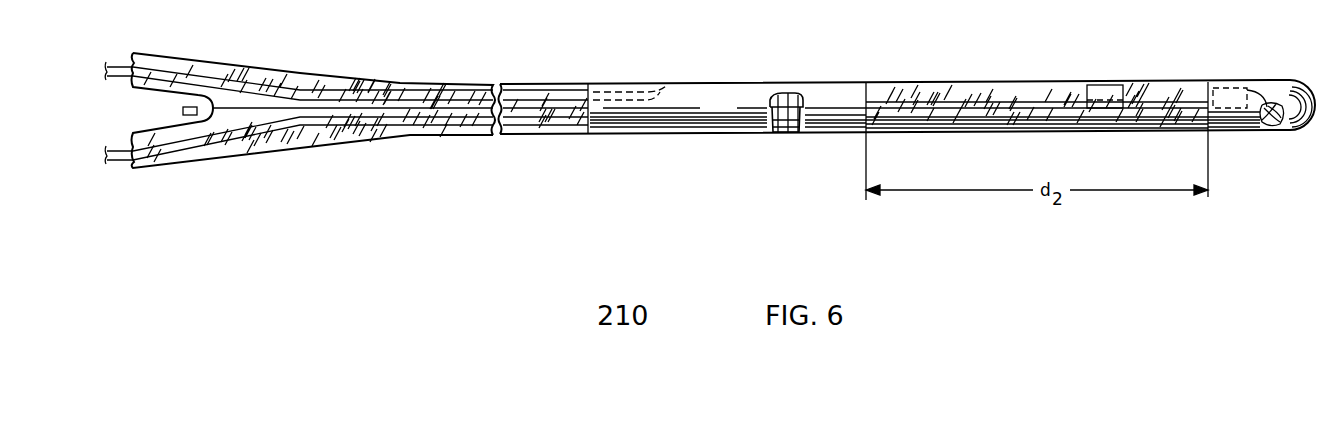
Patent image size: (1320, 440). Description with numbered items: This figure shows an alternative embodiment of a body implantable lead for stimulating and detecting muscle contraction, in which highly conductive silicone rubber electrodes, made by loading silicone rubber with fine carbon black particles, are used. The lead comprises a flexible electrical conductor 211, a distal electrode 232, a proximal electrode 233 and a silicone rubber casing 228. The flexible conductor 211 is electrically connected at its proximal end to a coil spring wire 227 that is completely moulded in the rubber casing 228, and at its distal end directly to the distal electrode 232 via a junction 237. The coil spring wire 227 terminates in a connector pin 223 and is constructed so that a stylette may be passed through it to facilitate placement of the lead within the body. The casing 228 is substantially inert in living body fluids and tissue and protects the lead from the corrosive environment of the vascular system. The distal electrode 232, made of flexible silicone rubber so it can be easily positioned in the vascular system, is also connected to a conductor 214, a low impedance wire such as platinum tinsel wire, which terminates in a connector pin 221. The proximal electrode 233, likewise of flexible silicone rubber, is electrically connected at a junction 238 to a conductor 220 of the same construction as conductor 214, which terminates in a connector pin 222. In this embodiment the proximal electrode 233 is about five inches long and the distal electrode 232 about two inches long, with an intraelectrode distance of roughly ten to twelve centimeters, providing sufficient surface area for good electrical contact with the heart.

The flexible electrical conductor 211 is at (1107, 87).
The conductor 214 is at (227, 145).
The conductor 220 is at (240, 80).
The connector pin 221 is at (99, 158).
The connector pin 222 is at (99, 64).
The connector pin 223 is at (183, 110).
The coil spring wire 227 is at (915, 100).
The silicone rubber casing 228 is at (1005, 80).
The distal electrode 232 is at (1243, 82).
The proximal electrode 233 is at (720, 83).
The junction 237 is at (1272, 127).
The junction 238 is at (657, 84).